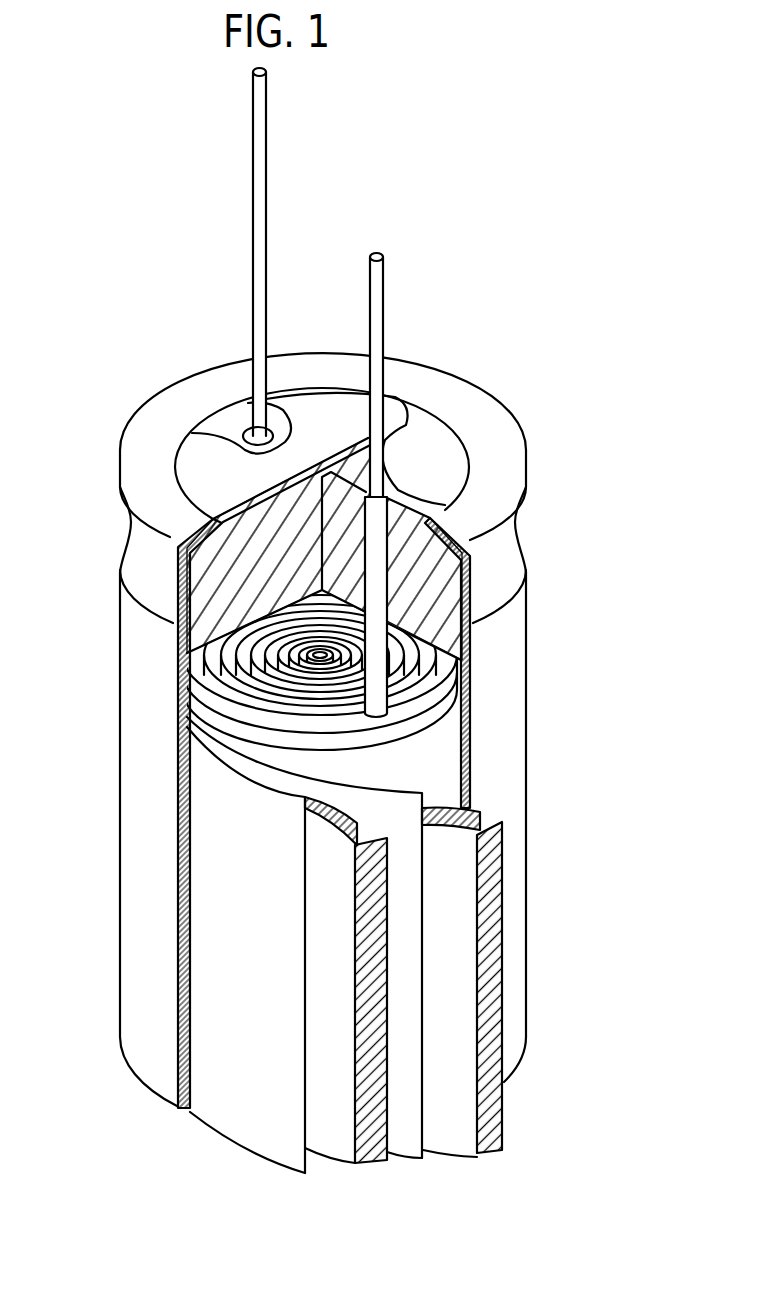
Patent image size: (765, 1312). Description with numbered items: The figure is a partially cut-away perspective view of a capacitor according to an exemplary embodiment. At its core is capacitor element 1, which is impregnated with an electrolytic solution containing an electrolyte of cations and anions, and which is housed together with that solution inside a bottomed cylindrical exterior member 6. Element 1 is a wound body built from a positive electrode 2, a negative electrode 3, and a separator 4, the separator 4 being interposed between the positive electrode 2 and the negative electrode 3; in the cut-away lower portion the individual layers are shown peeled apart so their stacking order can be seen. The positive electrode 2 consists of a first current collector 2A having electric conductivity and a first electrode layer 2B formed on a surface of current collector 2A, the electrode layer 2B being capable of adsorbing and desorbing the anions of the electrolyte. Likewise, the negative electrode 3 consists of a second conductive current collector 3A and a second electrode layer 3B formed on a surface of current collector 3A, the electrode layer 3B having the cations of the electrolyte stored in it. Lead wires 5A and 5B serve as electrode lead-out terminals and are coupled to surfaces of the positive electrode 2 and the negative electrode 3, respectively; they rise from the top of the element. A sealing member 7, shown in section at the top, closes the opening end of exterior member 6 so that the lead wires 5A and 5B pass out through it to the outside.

The capacitor element 1 is at (434, 884).
The positive electrode 2 is at (531, 983).
The current collector 2A is at (490, 852).
The electrode layer 2B is at (463, 905).
The negative electrode 3 is at (413, 950).
The current collector 3A is at (378, 965).
The electrode layer 3B is at (335, 1002).
The separator 4 is at (408, 1143).
The lead wire 5A is at (252, 205).
The lead wire 5B is at (383, 279).
The exterior member 6 is at (515, 610).
The sealing member 7 is at (215, 597).